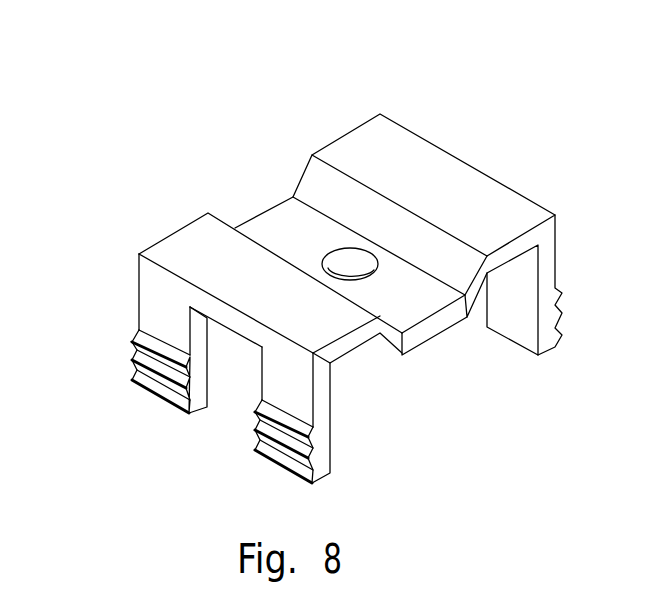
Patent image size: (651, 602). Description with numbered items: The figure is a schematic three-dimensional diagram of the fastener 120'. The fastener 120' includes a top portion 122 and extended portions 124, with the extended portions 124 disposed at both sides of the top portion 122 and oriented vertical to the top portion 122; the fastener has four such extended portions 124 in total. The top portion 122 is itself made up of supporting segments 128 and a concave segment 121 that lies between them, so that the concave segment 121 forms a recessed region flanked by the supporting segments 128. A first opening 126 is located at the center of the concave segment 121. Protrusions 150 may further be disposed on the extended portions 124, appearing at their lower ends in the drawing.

The fastener 120' is at (294, 241).
The top portion 122 is at (325, 55).
The concave segment 121 is at (298, 180).
The supporting segments 128 is at (343, 150).
The extended portions 124 is at (150, 305).
The first opening 126 is at (360, 276).
The protrusions 150 is at (148, 385).